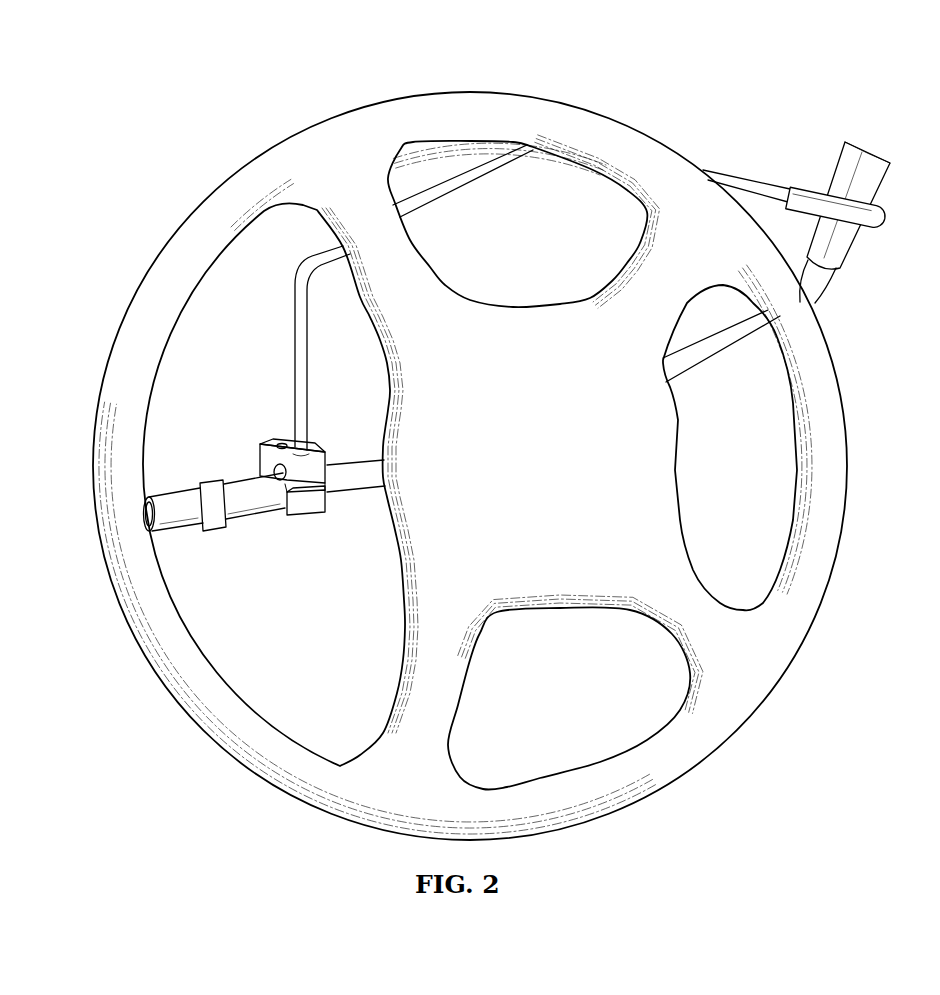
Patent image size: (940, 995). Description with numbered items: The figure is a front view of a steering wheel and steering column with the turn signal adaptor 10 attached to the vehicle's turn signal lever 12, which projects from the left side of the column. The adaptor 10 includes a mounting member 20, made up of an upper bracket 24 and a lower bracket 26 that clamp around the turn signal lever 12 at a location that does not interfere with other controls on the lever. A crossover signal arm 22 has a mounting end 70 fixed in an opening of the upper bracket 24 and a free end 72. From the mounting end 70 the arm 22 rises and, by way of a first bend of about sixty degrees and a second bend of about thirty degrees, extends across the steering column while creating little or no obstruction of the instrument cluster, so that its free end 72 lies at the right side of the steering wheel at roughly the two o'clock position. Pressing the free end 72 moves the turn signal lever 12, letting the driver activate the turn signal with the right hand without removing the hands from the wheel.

The turn signal adaptor 10 is at (729, 111).
The turn signal lever 12 is at (245, 522).
The mounting member 20 is at (313, 522).
The crossover signal arm 22 is at (467, 188).
The upper bracket 24 is at (320, 450).
The lower bracket 26 is at (284, 514).
The mounting end 70 is at (296, 448).
The free end 72 is at (747, 178).